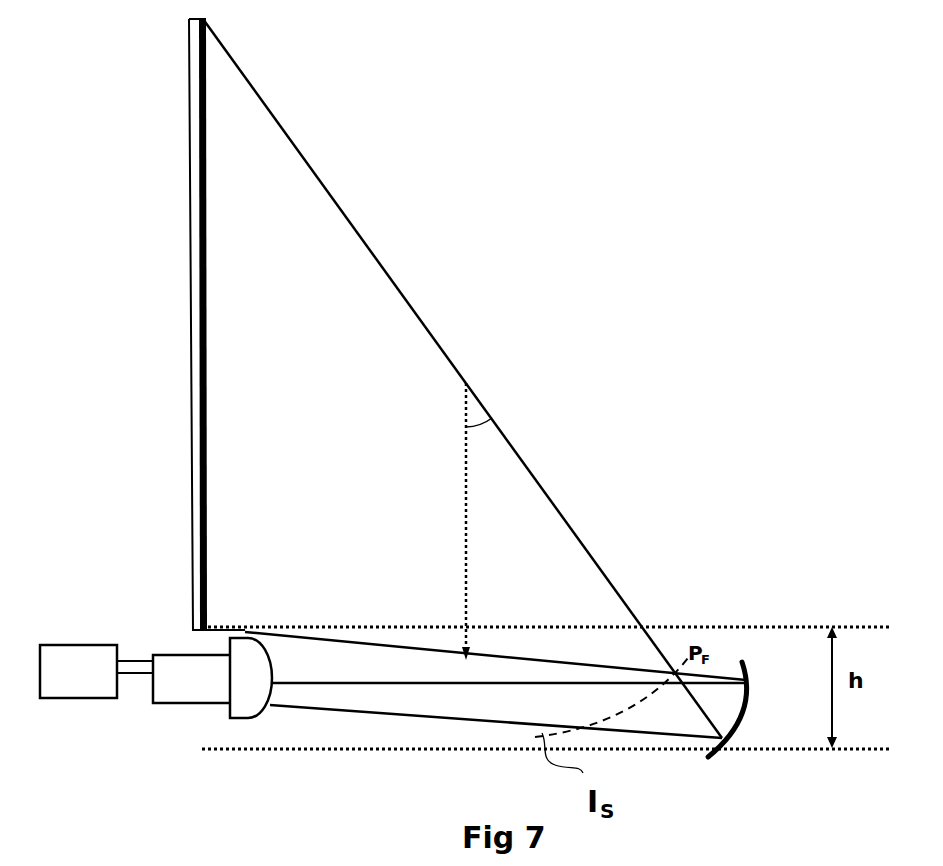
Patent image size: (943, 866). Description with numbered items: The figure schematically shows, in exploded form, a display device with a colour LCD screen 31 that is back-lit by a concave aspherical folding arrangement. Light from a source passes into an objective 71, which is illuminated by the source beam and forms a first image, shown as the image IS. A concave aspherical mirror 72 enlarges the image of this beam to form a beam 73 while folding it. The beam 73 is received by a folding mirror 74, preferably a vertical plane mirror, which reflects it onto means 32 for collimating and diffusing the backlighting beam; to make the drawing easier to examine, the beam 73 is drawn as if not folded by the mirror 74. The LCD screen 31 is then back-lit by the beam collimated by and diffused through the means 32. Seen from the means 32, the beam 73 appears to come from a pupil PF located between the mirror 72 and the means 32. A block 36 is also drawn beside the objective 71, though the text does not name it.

The colour LCD screen 31 is at (193, 168).
The means for collimating and diffusing the backlighting beam 32 is at (203, 320).
The light source unit 36 is at (107, 668).
The objective 71 is at (173, 700).
The concave aspherical mirror 72 is at (710, 757).
The beam 73 is at (533, 475).
The folding mirror 74 is at (494, 415).